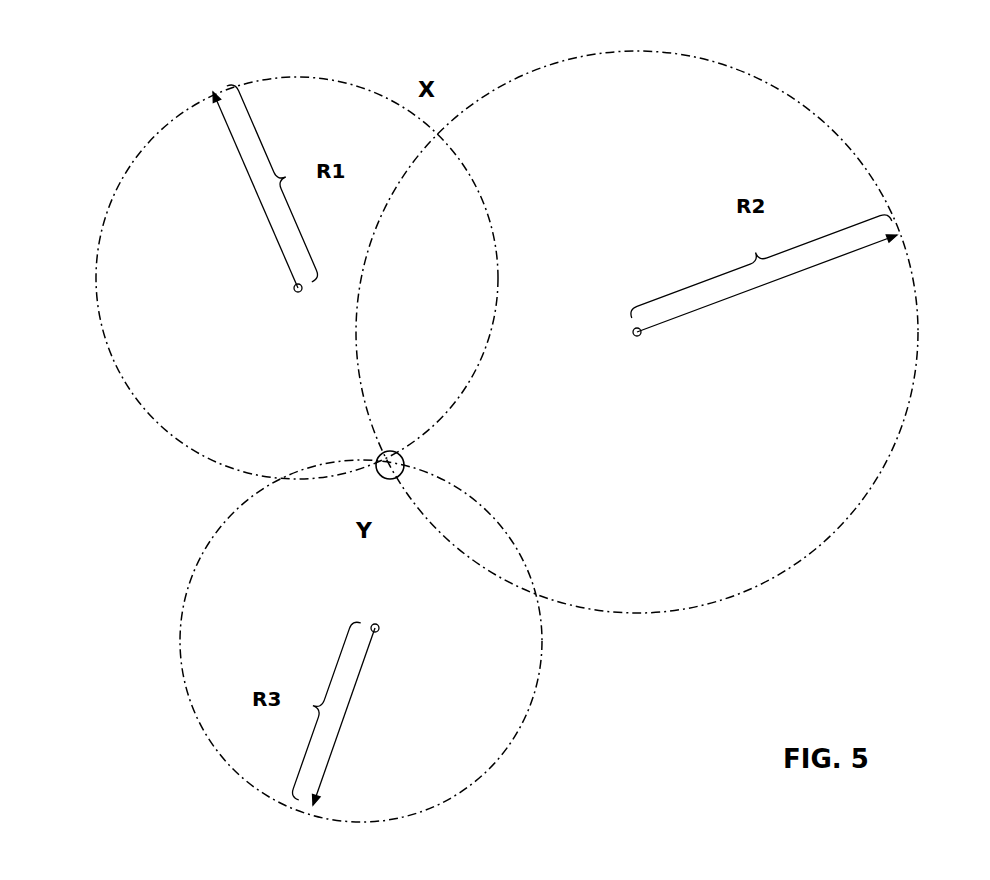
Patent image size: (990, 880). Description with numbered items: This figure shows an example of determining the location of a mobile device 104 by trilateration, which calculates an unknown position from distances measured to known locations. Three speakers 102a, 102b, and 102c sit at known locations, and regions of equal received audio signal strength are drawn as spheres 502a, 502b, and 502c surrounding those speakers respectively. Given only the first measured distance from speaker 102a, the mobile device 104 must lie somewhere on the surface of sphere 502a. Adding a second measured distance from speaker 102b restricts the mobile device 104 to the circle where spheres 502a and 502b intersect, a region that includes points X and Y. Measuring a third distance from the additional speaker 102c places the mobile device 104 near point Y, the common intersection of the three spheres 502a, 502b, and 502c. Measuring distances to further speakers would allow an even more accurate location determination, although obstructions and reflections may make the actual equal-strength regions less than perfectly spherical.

The sphere 502a is at (156, 142).
The sphere 502b is at (850, 147).
The sphere 502c is at (181, 641).
The speaker 102a is at (294, 290).
The speaker 102b is at (636, 336).
The speaker 102c is at (376, 632).
The mobile device 104 is at (382, 453).